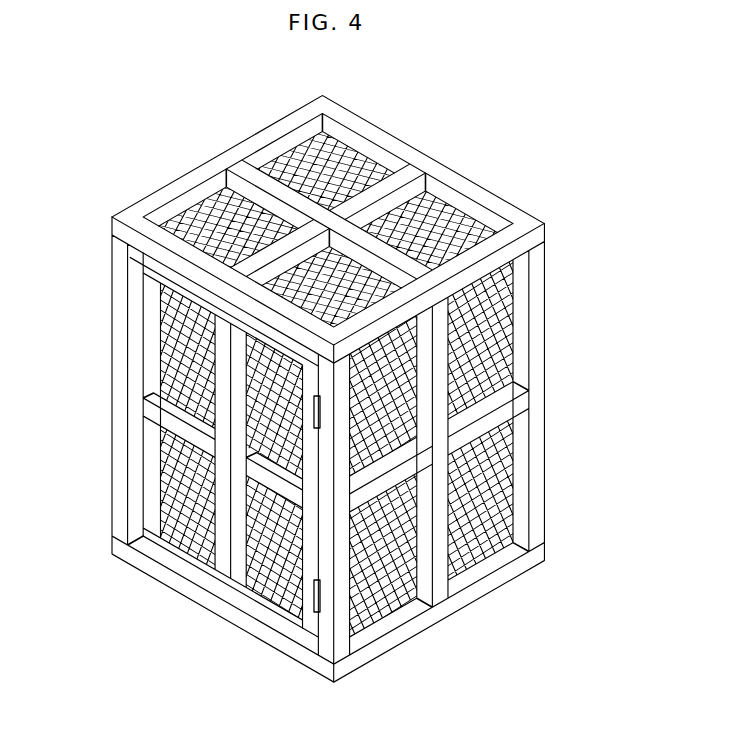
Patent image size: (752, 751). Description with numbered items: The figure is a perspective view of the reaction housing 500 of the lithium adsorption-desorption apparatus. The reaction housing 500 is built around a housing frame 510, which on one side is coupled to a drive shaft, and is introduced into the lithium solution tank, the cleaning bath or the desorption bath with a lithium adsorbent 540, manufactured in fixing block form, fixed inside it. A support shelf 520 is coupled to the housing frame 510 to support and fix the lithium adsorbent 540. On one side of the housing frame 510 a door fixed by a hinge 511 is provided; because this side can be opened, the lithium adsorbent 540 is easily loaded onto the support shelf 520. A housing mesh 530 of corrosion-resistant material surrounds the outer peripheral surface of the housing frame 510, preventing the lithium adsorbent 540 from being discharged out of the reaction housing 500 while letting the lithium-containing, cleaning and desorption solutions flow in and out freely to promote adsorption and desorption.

The reaction housing 500 is at (459, 134).
The housing frame 510 is at (140, 400).
The hinge 511 is at (314, 590).
The support shelf 520 is at (508, 312).
The housing mesh 530 is at (498, 214).
The lithium adsorbent 540 is at (512, 470).